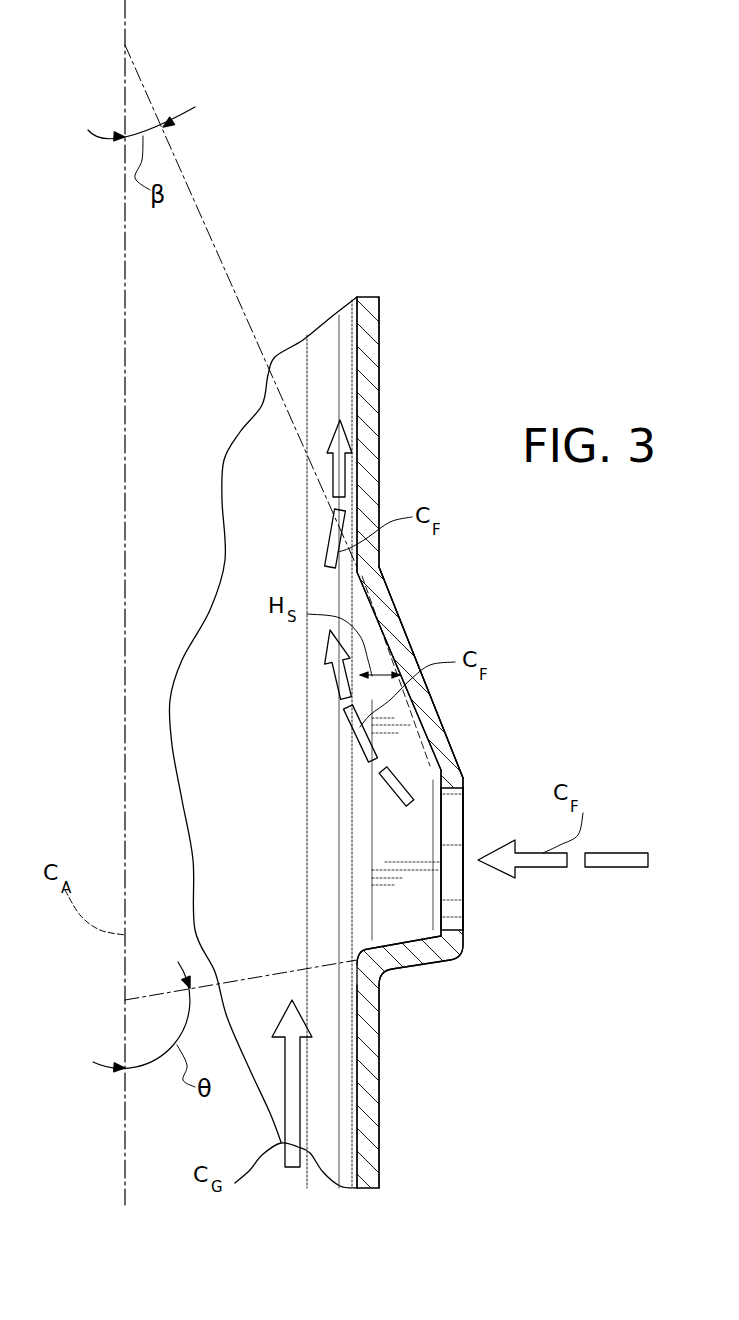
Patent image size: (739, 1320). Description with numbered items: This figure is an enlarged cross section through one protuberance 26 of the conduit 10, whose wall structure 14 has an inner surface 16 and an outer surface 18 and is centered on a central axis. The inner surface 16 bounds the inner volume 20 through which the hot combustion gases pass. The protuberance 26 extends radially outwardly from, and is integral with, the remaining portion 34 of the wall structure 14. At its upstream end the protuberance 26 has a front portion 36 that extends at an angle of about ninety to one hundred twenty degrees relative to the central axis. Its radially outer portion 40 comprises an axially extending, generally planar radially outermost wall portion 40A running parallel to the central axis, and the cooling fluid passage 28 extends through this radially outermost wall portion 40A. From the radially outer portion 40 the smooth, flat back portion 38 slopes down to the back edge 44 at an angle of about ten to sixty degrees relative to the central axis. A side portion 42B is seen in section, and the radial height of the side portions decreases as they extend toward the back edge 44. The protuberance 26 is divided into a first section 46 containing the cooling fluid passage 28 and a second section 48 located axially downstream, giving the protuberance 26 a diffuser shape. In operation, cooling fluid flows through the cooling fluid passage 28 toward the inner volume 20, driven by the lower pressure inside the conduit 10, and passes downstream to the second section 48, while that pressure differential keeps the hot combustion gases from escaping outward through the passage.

The conduit 10 is at (439, 755).
The wall structure 14 is at (390, 322).
The inner surface 16 is at (357, 356).
The outer surface 18 is at (381, 395).
The inner volume 20 is at (248, 714).
The protuberance 26 is at (443, 972).
The cooling fluid passage 28 is at (453, 903).
The remaining portion of the wall structure 34 is at (372, 1137).
The front portion 36 is at (392, 964).
The back portion 38 is at (397, 645).
The radially outer portion 40 is at (465, 778).
The radially outermost wall portion 40A is at (464, 789).
The side portion 42B is at (382, 908).
The back edge 44 is at (360, 596).
The first section 46 is at (473, 882).
The second section 48 is at (457, 732).